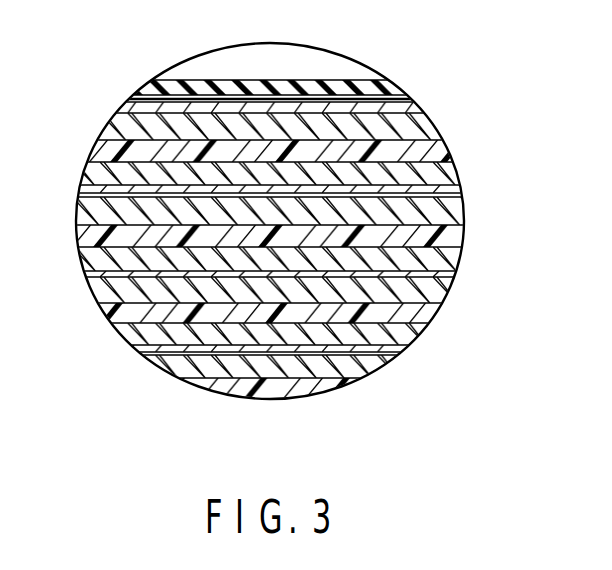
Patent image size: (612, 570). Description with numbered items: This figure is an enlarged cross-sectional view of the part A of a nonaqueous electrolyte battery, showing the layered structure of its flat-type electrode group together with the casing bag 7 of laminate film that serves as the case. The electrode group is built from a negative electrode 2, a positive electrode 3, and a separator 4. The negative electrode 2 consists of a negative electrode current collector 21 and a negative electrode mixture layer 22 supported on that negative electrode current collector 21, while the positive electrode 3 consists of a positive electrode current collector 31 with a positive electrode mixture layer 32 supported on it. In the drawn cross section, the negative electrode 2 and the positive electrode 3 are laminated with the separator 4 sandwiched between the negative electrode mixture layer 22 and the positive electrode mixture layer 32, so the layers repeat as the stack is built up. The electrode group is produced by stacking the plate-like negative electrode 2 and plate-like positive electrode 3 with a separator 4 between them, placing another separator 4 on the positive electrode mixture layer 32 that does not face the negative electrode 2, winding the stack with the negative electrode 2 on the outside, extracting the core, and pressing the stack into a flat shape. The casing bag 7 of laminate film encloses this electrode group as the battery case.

The part A is at (178, 72).
The casing bag 7 is at (398, 94).
The negative electrode 2 is at (313, 204).
The negative electrode current collector 21 is at (428, 106).
The negative electrode mixture layer 22 is at (422, 126).
The positive electrode 3 is at (313, 287).
The positive electrode current collector 31 is at (445, 193).
The positive electrode mixture layer 32 is at (445, 172).
The separator 4 is at (113, 149).